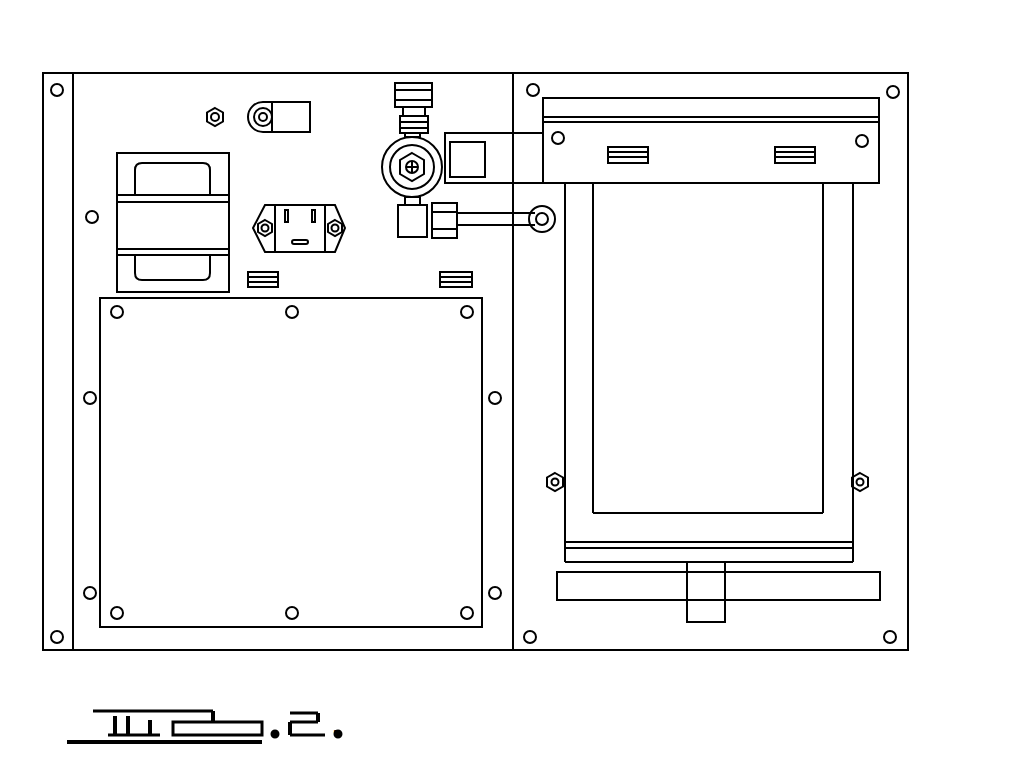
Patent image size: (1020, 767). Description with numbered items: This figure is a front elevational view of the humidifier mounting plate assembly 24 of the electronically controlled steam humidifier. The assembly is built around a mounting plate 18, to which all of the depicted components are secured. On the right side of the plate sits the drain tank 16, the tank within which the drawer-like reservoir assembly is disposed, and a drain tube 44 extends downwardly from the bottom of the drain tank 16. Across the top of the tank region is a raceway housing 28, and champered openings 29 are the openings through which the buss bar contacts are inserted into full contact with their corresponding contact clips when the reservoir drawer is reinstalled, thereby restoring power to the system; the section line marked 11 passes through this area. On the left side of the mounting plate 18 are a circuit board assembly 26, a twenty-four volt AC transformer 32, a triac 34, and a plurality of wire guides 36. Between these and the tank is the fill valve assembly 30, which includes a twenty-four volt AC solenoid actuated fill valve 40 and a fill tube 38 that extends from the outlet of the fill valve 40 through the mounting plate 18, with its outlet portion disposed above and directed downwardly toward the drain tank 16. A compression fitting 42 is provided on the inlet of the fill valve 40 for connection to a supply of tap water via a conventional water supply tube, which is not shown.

The section line 11- 11 is at (813, 98).
The drain tank 16 is at (812, 344).
The mounting plate 18 is at (155, 87).
The humidifier mounting plate assembly 24 is at (914, 86).
The circuit board assembly 26 is at (243, 612).
The raceway housing 28 is at (879, 163).
The champered openings 29 is at (628, 163).
The fill valve assembly 30 is at (382, 151).
The 24 volt AC transformer 32 is at (125, 152).
The triac 34 is at (295, 205).
The wire guides 36 is at (260, 287).
The fill tube 38 is at (497, 225).
The fill valve 40 is at (422, 150).
The compression fitting 42 is at (413, 80).
The drain tube 44 is at (706, 615).